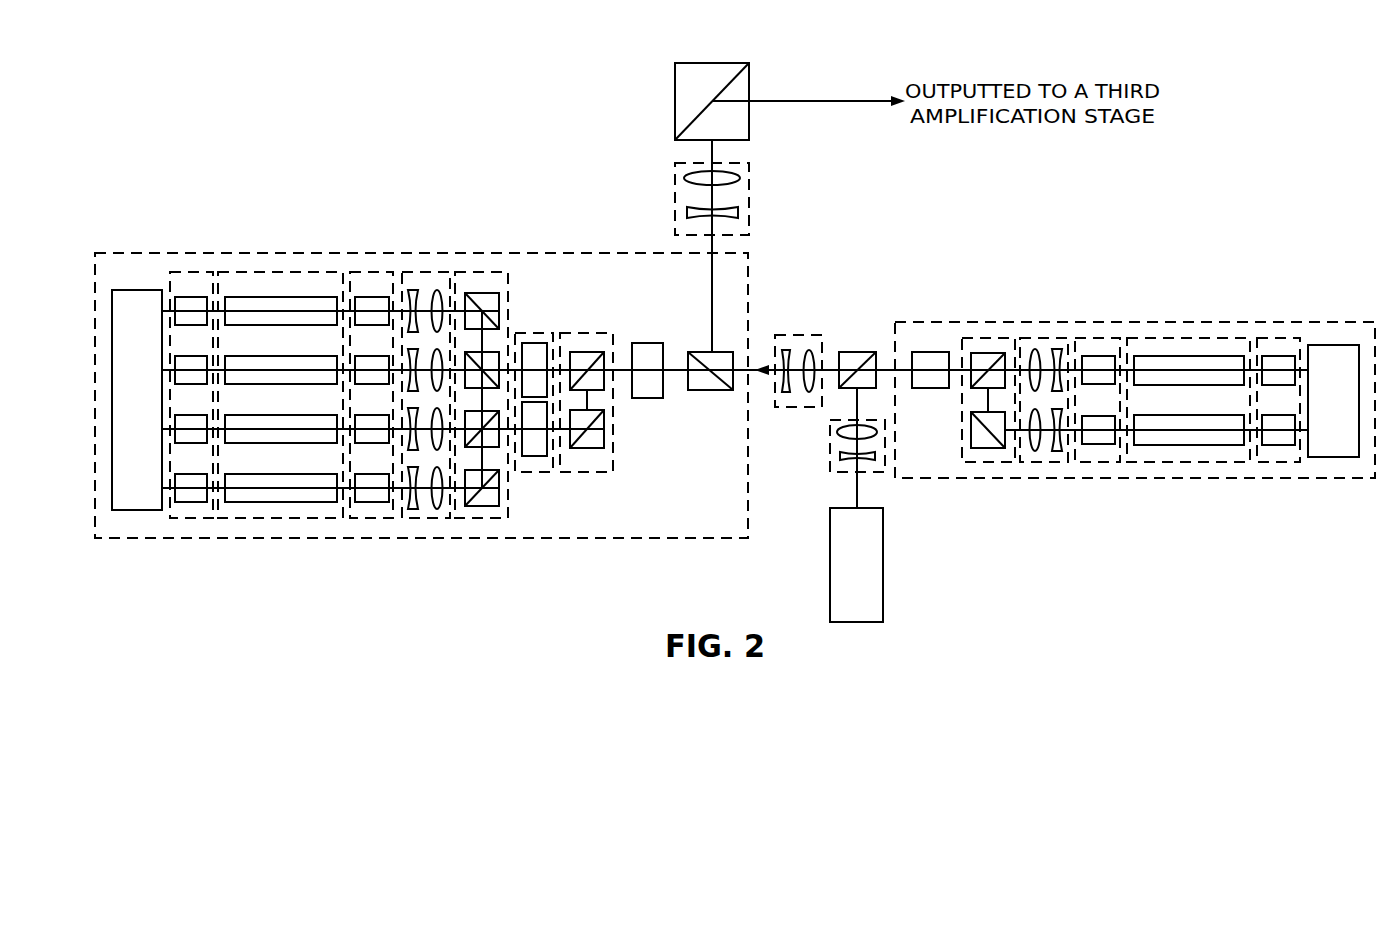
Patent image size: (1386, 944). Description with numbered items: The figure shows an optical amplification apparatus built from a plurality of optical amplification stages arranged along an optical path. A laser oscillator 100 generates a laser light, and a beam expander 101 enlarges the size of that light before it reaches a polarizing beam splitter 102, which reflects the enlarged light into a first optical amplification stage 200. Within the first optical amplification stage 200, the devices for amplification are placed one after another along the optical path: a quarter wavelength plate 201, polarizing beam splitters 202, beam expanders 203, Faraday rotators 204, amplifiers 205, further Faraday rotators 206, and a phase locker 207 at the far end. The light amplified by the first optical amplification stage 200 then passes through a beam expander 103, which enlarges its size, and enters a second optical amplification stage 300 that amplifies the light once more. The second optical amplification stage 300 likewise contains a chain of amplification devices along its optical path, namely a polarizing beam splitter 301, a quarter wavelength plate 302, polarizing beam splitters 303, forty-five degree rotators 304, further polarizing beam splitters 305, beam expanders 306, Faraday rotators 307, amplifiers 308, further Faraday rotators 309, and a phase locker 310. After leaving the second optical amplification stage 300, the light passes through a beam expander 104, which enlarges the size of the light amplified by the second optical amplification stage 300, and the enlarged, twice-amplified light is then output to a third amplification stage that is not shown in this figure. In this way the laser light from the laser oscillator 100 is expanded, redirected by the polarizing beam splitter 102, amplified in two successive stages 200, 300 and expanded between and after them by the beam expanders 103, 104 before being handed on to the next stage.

The laser oscillator 100 is at (830, 561).
The beam expander 101 is at (830, 453).
The polarizing beam splitter 102 is at (857, 352).
The beam expander 103 is at (783, 335).
The beam expander 104 is at (750, 200).
The first optical amplification stage 200 is at (1135, 478).
The quarter wavelength plate 201 is at (925, 394).
The polarizing beam splitters 202 is at (983, 338).
The beam expanders 203 is at (1040, 338).
The Faraday rotators 204 is at (1110, 338).
The amplifiers 205 is at (1190, 338).
The Faraday rotators 206 is at (1268, 338).
The phase locker 207 is at (1330, 345).
The second optical amplification stage 300 is at (603, 253).
The polarizing beam splitter 301 is at (688, 362).
The quarter wavelength plate 302 is at (645, 398).
The polarizing beam splitters 303 is at (600, 333).
The 45° rotators 304 is at (548, 333).
The polarizing beam splitters 305 is at (510, 278).
The beam expanders 306 is at (438, 272).
The Faraday rotators 307 is at (385, 272).
The amplifiers 308 is at (287, 272).
The Faraday rotators 309 is at (205, 272).
The phase locker 310 is at (137, 290).